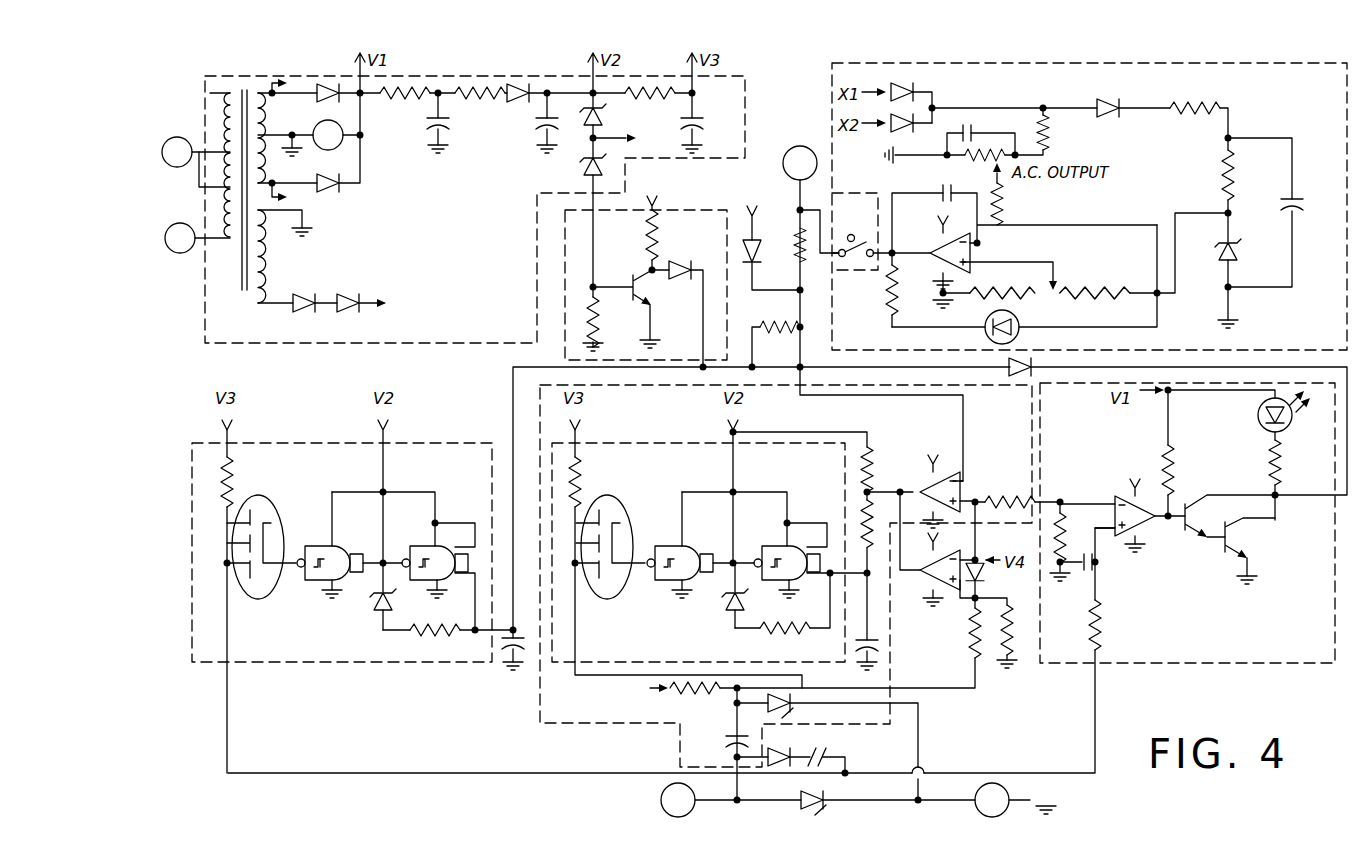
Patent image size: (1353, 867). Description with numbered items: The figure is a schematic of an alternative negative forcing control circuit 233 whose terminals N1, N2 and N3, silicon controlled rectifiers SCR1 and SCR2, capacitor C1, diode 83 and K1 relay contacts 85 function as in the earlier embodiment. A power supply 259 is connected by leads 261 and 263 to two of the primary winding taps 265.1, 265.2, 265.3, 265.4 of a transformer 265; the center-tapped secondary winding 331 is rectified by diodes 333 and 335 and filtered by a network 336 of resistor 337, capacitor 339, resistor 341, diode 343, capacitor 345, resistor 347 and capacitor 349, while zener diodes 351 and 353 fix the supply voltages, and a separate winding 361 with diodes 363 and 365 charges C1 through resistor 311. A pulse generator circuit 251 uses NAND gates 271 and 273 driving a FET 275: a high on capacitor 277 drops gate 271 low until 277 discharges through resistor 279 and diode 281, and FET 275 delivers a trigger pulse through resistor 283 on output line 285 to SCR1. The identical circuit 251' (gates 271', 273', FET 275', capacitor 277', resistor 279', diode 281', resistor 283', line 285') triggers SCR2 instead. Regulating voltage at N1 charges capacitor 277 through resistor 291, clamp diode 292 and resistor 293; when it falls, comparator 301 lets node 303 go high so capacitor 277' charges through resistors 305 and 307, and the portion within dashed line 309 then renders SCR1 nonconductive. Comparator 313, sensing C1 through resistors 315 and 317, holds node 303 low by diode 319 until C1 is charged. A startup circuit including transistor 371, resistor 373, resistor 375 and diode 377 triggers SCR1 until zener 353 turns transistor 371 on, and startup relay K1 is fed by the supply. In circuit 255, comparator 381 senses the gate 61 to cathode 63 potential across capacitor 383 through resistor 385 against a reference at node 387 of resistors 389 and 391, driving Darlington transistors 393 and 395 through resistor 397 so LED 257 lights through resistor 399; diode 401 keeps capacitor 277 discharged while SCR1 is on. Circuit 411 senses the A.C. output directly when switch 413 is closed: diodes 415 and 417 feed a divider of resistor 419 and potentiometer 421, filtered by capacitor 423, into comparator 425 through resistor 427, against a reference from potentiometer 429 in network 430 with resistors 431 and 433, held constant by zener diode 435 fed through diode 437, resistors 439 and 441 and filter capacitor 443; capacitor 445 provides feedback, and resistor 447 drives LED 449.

The negative forcing control circuit 233 is at (808, 88).
The pulse generator circuit 251 is at (342, 521).
The pulse generator circuit 251' is at (698, 521).
The LED drive circuit 255 is at (1165, 663).
The light emitting diode 257 is at (1258, 414).
The power supply 259 is at (482, 76).
The lead 261 is at (200, 160).
The lead 263 is at (200, 248).
The transformer 265 is at (248, 292).
The primary winding tap 265.1 is at (238, 66).
The primary winding tap 265.2 is at (230, 120).
The primary winding tap 265.3 is at (226, 152).
The primary winding tap 265.4 is at (230, 190).
The NAND gate with hysteresis 271 is at (421, 578).
The NAND gate with hysteresis 271' is at (792, 556).
The NAND gate with hysteresis 273 is at (340, 545).
The NAND gate with hysteresis 273' is at (681, 552).
The FET 275 is at (275, 539).
The FET 275' is at (629, 537).
The capacitor 277 is at (476, 659).
The capacitor 277' is at (901, 648).
The resistor 279 is at (447, 642).
The resistor 279' is at (786, 615).
The diode 281 is at (357, 608).
The diode 281' is at (709, 609).
The resistor 283 is at (257, 601).
The resistor 283' is at (685, 559).
The output line 285 is at (265, 628).
The output line 285' is at (611, 629).
The resistor 291 is at (773, 235).
The clamp diode 292 is at (796, 262).
The resistor 293 is at (766, 322).
The comparator 301 is at (950, 484).
The node 303 is at (870, 490).
The resistor 305 is at (866, 448).
The resistor 307 is at (864, 514).
The dashed line 309 is at (585, 724).
The resistor 311 is at (646, 698).
The comparator 313 is at (930, 586).
The resistor 315 is at (972, 646).
The resistor 317 is at (1002, 660).
The diode 319 is at (985, 572).
The center-tapped secondary winding 331 is at (262, 128).
The diode 333 is at (332, 84).
The diode 335 is at (334, 189).
The filter network 336 is at (496, 166).
The resistor 337 is at (400, 98).
The capacitor 339 is at (450, 126).
The resistor 341 is at (466, 98).
The diode 343 is at (522, 84).
The capacitor 345 is at (540, 134).
The resistor 347 is at (682, 100).
The capacitor 349 is at (700, 132).
The zener diode 351 is at (604, 122).
The zener diode 353 is at (588, 166).
The secondary winding 361 is at (270, 264).
The diode 363 is at (308, 296).
The diode 365 is at (348, 312).
The transistor 371 is at (628, 280).
The resistor 373 is at (598, 326).
The resistor 375 is at (656, 240).
The diode 377 is at (680, 282).
The comparator 381 is at (1142, 534).
The capacitor 383 is at (1086, 570).
The resistor 385 is at (1102, 622).
The node 387 is at (1062, 500).
The resistor 389 is at (1026, 504).
The resistor 391 is at (1064, 522).
The transistor 393 is at (1202, 544).
The transistor 395 is at (1252, 560).
The resistor 397 is at (1174, 470).
The resistor 399 is at (1270, 462).
The diode 401 is at (1014, 374).
The A.C. sensing circuit 411 is at (1250, 350).
The switch 413 is at (864, 246).
The rectifier diode 415 is at (900, 84).
The rectifier diode 417 is at (896, 132).
The resistor 419 is at (1050, 136).
The potentiometer 421 is at (970, 164).
The capacitor 423 is at (975, 126).
The comparator 425 is at (982, 248).
The resistor 427 is at (1006, 210).
The potentiometer 429 is at (1058, 276).
The reference network 430 is at (1085, 316).
The resistor 431 is at (1120, 290).
The resistor 433 is at (1014, 272).
The zener diode 435 is at (1232, 262).
The diode 437 is at (1106, 98).
The resistor 439 is at (1196, 116).
The resistor 441 is at (1222, 180).
The filter capacitor 443 is at (1302, 196).
The capacitor 445 is at (954, 200).
The resistor 447 is at (888, 288).
The light emitting diode 449 is at (998, 336).
The diode 83 is at (778, 760).
The relay contacts 85 is at (838, 760).
The gate 61 is at (882, 790).
The cathode 63 is at (897, 790).
The silicon controlled rectifier SCR1 is at (805, 796).
The silicon controlled rectifier SCR2 is at (792, 724).
The capacitor C1 is at (730, 736).
The startup relay K1 is at (323, 138).
The terminal N1 is at (784, 170).
The terminal N2 is at (660, 806).
The terminal N3 is at (1010, 794).